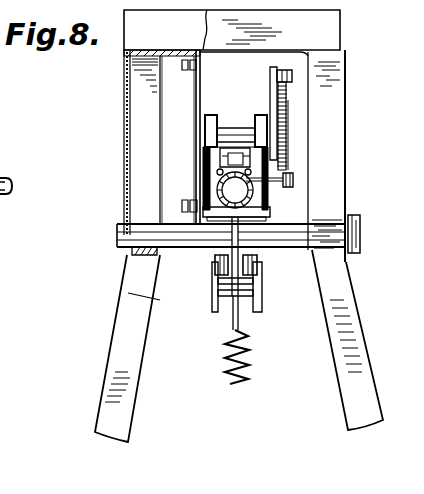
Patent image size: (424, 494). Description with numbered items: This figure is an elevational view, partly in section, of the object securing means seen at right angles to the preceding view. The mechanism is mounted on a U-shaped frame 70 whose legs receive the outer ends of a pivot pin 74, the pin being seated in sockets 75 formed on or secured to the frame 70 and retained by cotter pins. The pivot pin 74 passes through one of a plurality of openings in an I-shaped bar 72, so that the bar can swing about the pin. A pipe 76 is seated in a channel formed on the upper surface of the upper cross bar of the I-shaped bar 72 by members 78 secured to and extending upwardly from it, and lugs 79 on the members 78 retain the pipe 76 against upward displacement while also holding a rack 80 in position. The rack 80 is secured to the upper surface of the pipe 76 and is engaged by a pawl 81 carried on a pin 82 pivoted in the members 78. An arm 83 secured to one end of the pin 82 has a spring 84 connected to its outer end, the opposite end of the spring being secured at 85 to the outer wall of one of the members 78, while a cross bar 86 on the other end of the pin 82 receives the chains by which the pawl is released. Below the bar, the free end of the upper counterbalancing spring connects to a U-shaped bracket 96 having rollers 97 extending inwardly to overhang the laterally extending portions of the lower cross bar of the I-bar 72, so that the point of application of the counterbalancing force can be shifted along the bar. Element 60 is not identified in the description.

The frame upright 60 is at (327, 153).
The U-shaped frame 70 is at (343, 285).
The I-shaped bar 72 is at (257, 250).
The pivot pin 74 is at (292, 236).
The sockets 75 is at (147, 257).
The pipe 76 is at (246, 196).
The members 78 is at (210, 180).
The lugs 79 is at (216, 170).
The rack 80 is at (237, 140).
The pawl 81 is at (286, 137).
The pin 82 is at (225, 130).
The arm 83 is at (276, 70).
The spring 84 is at (284, 100).
The spring attachment point 85 is at (294, 180).
The cross bar 86 is at (197, 94).
The U-shaped bracket 96 is at (260, 294).
The rollers 97 is at (220, 264).